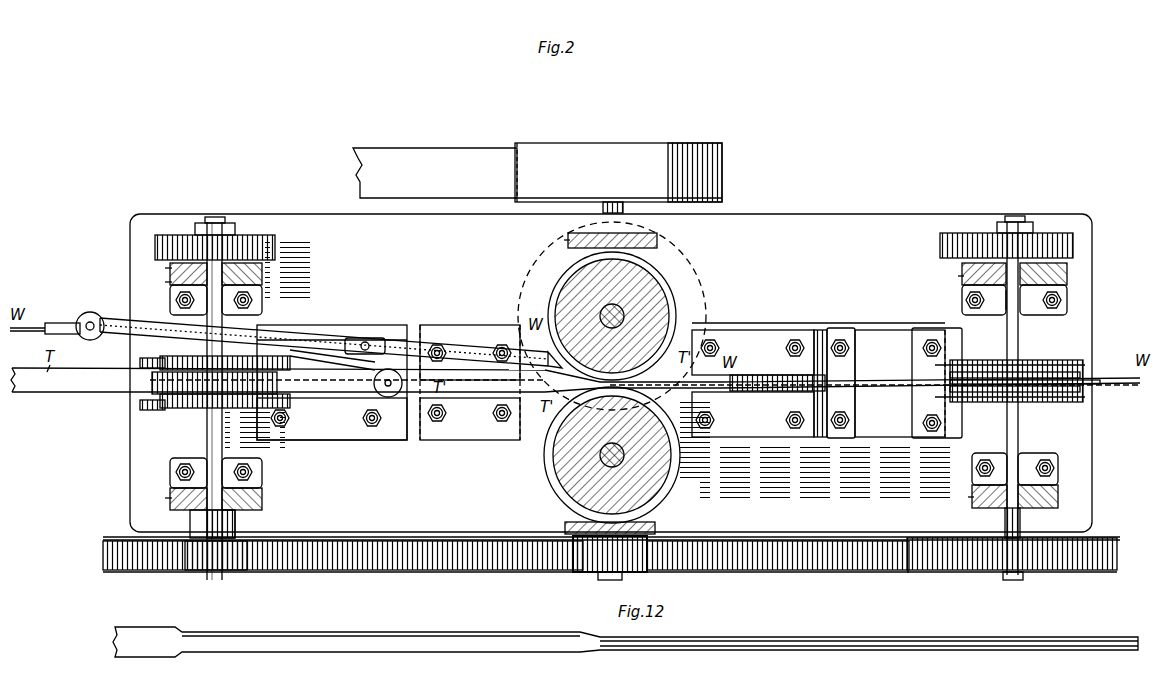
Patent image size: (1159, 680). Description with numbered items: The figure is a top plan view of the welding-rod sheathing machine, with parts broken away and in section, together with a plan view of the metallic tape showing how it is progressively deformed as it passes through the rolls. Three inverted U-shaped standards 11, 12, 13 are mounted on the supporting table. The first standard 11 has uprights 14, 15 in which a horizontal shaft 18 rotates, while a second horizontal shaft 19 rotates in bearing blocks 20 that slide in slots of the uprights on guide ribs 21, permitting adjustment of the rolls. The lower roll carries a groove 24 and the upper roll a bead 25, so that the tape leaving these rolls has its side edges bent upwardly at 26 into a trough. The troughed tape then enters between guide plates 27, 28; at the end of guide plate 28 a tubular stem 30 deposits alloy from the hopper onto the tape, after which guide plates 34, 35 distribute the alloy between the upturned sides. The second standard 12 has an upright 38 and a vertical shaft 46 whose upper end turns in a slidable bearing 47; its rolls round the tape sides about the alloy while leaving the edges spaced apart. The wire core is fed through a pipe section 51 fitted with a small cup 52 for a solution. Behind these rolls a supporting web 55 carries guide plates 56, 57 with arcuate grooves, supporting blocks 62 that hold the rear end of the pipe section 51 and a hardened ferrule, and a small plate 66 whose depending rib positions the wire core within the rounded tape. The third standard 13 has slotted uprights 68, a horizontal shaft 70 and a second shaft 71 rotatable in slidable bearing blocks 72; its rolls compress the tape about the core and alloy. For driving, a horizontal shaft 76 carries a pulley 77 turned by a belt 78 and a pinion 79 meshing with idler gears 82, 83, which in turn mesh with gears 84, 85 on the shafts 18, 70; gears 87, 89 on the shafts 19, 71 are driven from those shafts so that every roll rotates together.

In FIG. 2, the standard 11 is at (170, 282).
In FIG. 2, the standard 12 is at (568, 240).
In FIG. 2, the standard 13 is at (962, 277).
In FIG. 12, the standard 13 is at (125, 662).
In FIG. 2, the upright 14 is at (170, 268).
In FIG. 2, the upright 15 is at (170, 498).
In FIG. 2, the horizontal shaft 18 is at (206, 441).
In FIG. 2, the horizontal shaft 19 is at (220, 222).
In FIG. 2, the bearing blocks 20 is at (262, 275).
In FIG. 2, the guide ribs 21 is at (262, 266).
In FIG. 2, the groove 24 is at (168, 410).
In FIG. 2, the bead 25 is at (150, 386).
In FIG. 2, the upturned side edges 26 is at (412, 372).
In FIG. 2, the guide plate 27 is at (332, 419).
In FIG. 2, the guide plate 28 is at (352, 332).
In FIG. 2, the tubular stem 30 is at (380, 340).
In FIG. 2, the guide plate 34 is at (478, 330).
In FIG. 2, the guide plate 35 is at (470, 442).
In FIG. 2, the upright 38 is at (657, 242).
In FIG. 2, the shaft 46 is at (600, 452).
In FIG. 2, the bearing 47 is at (622, 318).
In FIG. 2, the pipe section 51 is at (312, 335).
In FIG. 2, the cup 52 is at (84, 318).
In FIG. 2, the supporting web 55 is at (900, 382).
In FIG. 2, the guide plate 56 is at (818, 349).
In FIG. 2, the guide plate 57 is at (753, 414).
In FIG. 2, the supporting blocks 62 is at (848, 335).
In FIG. 2, the small plate 66 is at (930, 360).
In FIG. 2, the uprights 68 is at (1067, 273).
In FIG. 2, the horizontal shaft 70 is at (1005, 524).
In FIG. 2, the horizontal shaft 71 is at (1008, 342).
In FIG. 2, the bearing blocks 72 is at (995, 388).
In FIG. 2, the horizontal shaft 76 is at (612, 203).
In FIG. 2, the pulley 77 is at (622, 150).
In FIG. 2, the belt 78 is at (440, 158).
In FIG. 2, the pinion 79 is at (577, 575).
In FIG. 2, the idler gear 82 is at (410, 562).
In FIG. 2, the idler gear 83 is at (845, 565).
In FIG. 2, the gear 84 is at (190, 552).
In FIG. 2, the gear 85 is at (1063, 556).
In FIG. 2, the gear 87 is at (180, 240).
In FIG. 2, the gear 89 is at (972, 240).